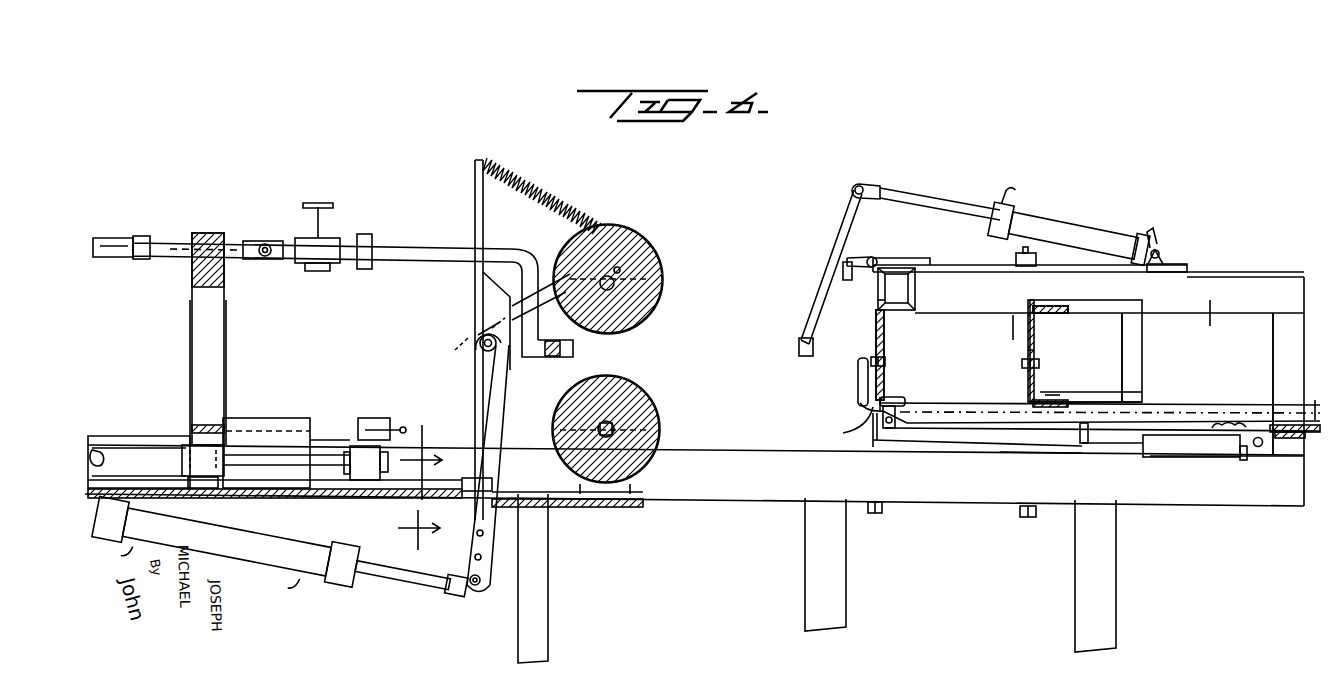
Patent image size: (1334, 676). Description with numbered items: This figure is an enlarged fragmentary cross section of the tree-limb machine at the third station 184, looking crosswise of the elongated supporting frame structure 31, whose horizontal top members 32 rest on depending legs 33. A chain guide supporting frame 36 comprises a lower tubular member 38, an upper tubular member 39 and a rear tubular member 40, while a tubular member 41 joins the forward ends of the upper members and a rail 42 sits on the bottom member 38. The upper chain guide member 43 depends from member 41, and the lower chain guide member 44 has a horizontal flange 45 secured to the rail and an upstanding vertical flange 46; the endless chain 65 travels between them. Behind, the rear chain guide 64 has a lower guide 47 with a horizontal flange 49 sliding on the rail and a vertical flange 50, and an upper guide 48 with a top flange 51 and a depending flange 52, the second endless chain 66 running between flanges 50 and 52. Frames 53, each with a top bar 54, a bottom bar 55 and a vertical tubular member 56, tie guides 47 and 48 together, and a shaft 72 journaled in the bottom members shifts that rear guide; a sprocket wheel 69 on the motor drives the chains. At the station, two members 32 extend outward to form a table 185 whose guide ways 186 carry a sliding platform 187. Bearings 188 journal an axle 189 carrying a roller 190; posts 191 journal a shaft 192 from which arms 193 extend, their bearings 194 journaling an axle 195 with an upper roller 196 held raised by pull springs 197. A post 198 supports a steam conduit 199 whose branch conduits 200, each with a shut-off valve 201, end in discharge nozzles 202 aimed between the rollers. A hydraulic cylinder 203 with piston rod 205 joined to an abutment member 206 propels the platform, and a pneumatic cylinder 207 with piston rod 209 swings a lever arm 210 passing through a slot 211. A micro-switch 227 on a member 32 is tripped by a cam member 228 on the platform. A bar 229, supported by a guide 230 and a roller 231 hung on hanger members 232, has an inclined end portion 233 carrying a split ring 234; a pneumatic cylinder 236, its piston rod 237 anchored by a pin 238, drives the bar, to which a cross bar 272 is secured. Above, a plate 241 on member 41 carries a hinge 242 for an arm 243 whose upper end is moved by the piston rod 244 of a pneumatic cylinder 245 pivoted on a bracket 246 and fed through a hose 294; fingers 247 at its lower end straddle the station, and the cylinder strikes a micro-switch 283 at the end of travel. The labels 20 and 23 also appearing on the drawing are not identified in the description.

The conveyor line / arrow direction 20 is at (1319, 409).
The direction arrow 23 is at (420, 490).
The supporting frame structure 31 is at (1135, 507).
The horizontal top members 32 is at (720, 449).
The depending legs 33 is at (1125, 600).
The chain guide supporting frame 36 is at (1269, 272).
The lower tubular member 38 is at (978, 452).
The upper tubular member 39 is at (1205, 324).
The rear tubular member 40 is at (1280, 336).
The tubular member 41 is at (912, 293).
The rail 42 is at (945, 404).
The upper chain guide member 43 is at (886, 330).
The lower chain guide member 44 is at (906, 392).
The horizontal flange 45 is at (905, 400).
The vertical flange 46 is at (858, 410).
The lower guide 47 is at (1033, 415).
The upper guide 48 is at (1026, 333).
The horizontal flange 49 is at (1072, 404).
The vertical flange 50 is at (1040, 400).
The horizontal top flange 51 is at (1060, 313).
The vertical flange 52 is at (1020, 335).
The frame 53 is at (1150, 386).
The top bar 54 is at (1100, 300).
The bottom bar 55 is at (1130, 378).
The vertical tubular member 56 is at (1133, 343).
The rear chain guide 64 is at (1010, 357).
The endless chain 65 is at (897, 525).
The second endless chain 66 is at (1050, 528).
The sprocket wheel 69 is at (873, 301).
The shaft 72 is at (1258, 446).
The third station 184 is at (846, 189).
The table 185 is at (716, 499).
The guide ways 186 is at (400, 511).
The platform 187 is at (315, 500).
The bearings 188 is at (655, 412).
The axle 189 is at (598, 428).
The roller 190 is at (640, 398).
The posts 191 is at (471, 395).
The shaft 192 is at (480, 348).
The arms 193 is at (468, 335).
The bearings 194 is at (640, 278).
The axle 195 is at (614, 285).
The roller 196 is at (650, 318).
The pull springs 197 is at (575, 217).
The post 198 is at (230, 362).
The steam conduit 199 is at (180, 255).
The branch conduits 200 is at (418, 280).
The shut-off valve 201 is at (335, 222).
The discharge nozzle 202 is at (552, 357).
The hydraulic cylinder 203 is at (97, 452).
The piston rod 205 is at (330, 446).
The abutment member 206 is at (300, 479).
The pneumatic cylinder 207 is at (283, 563).
The piston rod 209 is at (420, 588).
The lever arm 210 is at (492, 478).
The slot 211 is at (455, 500).
The micro-switch 227 is at (380, 418).
The cam member 228 is at (265, 418).
The bar 229 is at (977, 438).
The guide 230 is at (1280, 425).
The roller 231 is at (895, 426).
The hanger members 232 is at (875, 430).
The inclined end portion 233 is at (843, 433).
The split ring 234 is at (858, 388).
The pneumatic cylinder 236 is at (1190, 448).
The piston rod 237 is at (1115, 443).
The pin 238 is at (1080, 435).
The plate 241 is at (970, 265).
The hinge 242 is at (874, 258).
The arm 243 is at (843, 245).
The piston rod 244 is at (930, 203).
The pneumatic cylinder 245 is at (1065, 228).
The bracket 246 is at (1163, 258).
The fingers 247 is at (799, 350).
The cross bar 272 is at (1215, 422).
The micro-switch 283 is at (1016, 262).
The hose 294 is at (1150, 230).